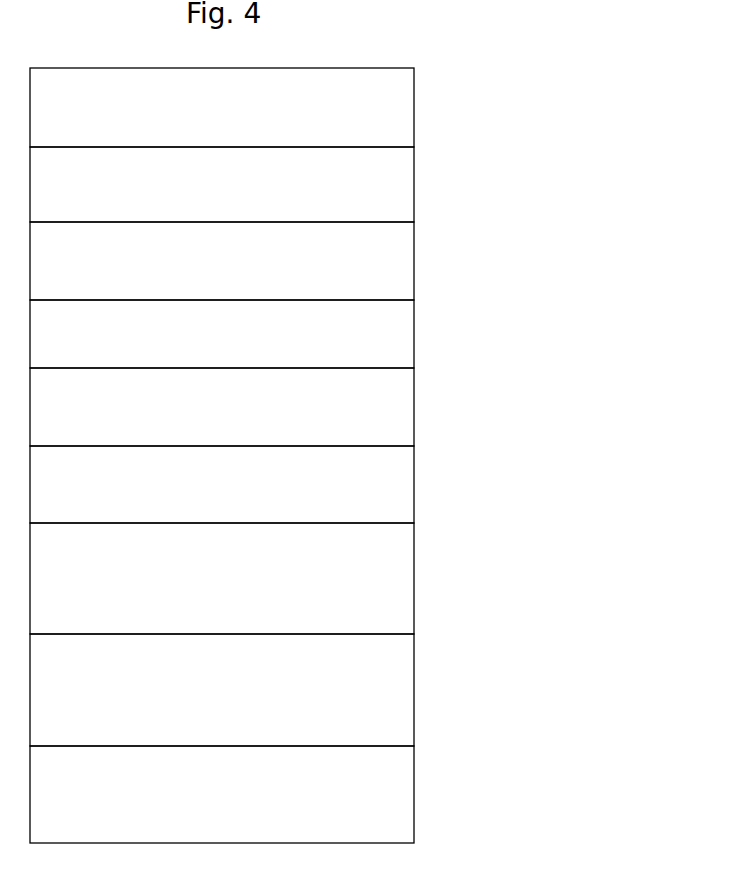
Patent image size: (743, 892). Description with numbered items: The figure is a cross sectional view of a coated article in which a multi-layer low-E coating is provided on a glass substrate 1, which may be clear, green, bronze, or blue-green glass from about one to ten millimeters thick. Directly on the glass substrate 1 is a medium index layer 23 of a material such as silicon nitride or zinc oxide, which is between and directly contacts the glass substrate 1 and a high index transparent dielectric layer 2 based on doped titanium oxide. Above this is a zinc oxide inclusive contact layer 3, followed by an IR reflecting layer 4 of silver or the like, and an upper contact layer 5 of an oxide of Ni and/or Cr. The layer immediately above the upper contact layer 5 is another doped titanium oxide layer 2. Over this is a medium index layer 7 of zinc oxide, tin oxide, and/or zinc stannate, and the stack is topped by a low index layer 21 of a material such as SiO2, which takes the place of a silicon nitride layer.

The low index layer 21 is at (362, 102).
The medium index layer 7 is at (397, 188).
The high index transparent dielectric layer 2 is at (385, 255).
The upper contact layer 5 is at (382, 323).
The IR reflecting layer 4 is at (329, 402).
The contact layer 3 is at (340, 478).
The medium index layer 23 is at (390, 678).
The glass substrate 1 is at (384, 788).